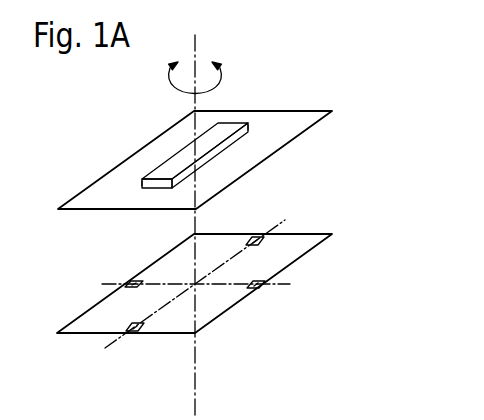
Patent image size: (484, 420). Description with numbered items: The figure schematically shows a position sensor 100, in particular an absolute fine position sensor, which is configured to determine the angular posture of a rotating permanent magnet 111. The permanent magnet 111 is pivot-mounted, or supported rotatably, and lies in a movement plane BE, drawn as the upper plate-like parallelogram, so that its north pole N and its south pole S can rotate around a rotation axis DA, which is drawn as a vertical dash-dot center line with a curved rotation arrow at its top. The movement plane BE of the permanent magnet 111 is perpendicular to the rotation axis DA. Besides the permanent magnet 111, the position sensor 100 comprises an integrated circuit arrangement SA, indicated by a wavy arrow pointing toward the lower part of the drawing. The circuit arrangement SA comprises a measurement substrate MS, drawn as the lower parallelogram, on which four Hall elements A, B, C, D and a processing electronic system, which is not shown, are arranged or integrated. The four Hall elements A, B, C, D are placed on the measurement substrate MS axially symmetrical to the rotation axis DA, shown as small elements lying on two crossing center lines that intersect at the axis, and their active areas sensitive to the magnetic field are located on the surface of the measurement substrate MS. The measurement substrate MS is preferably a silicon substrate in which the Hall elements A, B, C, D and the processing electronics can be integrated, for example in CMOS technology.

The position sensor 100 is at (286, 36).
The permanent magnet 111 is at (234, 122).
The movement plane BE is at (333, 112).
The integrated circuit arrangement SA is at (368, 170).
The measurement substrate MS is at (314, 249).
The rotation axis DA is at (195, 395).
The north pole N is at (132, 185).
The south pole S is at (257, 126).
The Hall element A is at (274, 225).
The Hall element B is at (274, 285).
The Hall element C is at (115, 343).
The Hall element D is at (114, 286).